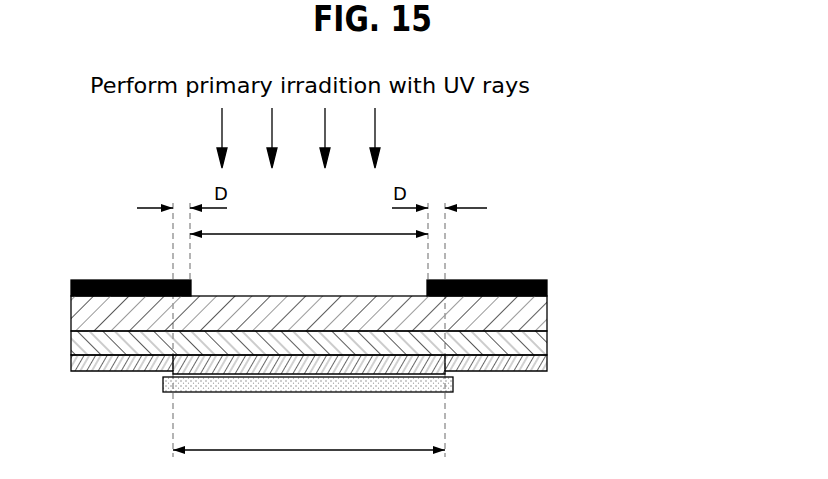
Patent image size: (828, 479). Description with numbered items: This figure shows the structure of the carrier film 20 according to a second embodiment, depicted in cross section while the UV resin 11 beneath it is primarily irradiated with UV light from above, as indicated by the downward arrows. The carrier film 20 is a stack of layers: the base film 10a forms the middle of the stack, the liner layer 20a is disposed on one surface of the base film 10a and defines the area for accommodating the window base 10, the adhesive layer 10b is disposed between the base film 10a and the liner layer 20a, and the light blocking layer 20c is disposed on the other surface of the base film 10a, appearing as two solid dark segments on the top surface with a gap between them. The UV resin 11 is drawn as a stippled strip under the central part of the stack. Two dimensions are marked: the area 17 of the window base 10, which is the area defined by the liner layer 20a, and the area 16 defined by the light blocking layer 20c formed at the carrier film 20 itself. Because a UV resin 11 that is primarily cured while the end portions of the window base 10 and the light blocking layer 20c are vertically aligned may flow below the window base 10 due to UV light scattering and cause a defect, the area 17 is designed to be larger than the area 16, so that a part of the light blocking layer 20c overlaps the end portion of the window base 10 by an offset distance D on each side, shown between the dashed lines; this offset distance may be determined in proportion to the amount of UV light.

The carrier film 20 is at (386, 349).
The light blocking layer 20c is at (547, 288).
The window base 10 is at (358, 364).
The base film 10a is at (543, 315).
The adhesive layer 10b is at (543, 346).
The liner layer 20a is at (358, 375).
The UV resin 11 is at (453, 384).
The area defined by the light blocking layer 16 is at (309, 221).
The area of the window base 17 is at (309, 437).